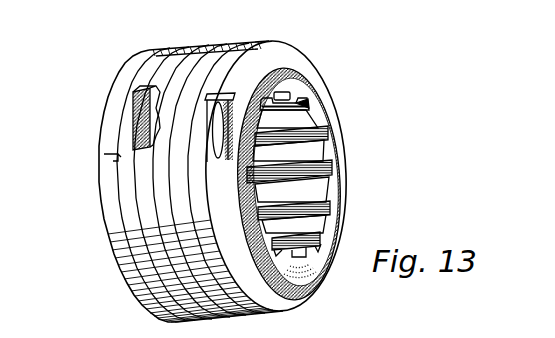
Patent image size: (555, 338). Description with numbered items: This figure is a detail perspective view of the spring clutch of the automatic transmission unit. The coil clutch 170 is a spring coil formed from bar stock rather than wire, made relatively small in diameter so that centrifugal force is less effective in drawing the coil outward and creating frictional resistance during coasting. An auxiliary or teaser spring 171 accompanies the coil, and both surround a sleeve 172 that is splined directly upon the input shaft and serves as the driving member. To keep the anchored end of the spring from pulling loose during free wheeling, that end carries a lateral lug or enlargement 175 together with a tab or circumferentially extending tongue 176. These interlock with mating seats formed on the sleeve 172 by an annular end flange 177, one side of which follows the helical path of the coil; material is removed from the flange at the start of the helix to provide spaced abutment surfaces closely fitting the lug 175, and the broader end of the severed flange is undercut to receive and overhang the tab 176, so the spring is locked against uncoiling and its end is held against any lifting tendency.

The coil clutch 170 is at (278, 53).
The auxiliary or teaser spring 171 is at (223, 133).
The sleeve 172 is at (312, 266).
The lateral lug or enlargement 175 is at (113, 123).
The tab or circumferentially extending tongue 176 is at (141, 95).
The annular end flange 177 is at (110, 212).